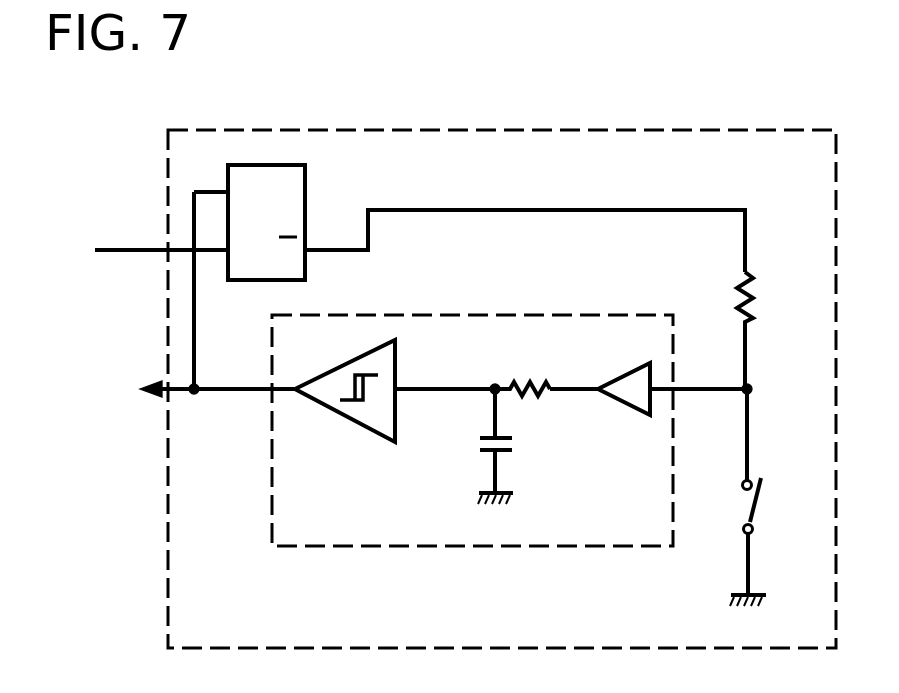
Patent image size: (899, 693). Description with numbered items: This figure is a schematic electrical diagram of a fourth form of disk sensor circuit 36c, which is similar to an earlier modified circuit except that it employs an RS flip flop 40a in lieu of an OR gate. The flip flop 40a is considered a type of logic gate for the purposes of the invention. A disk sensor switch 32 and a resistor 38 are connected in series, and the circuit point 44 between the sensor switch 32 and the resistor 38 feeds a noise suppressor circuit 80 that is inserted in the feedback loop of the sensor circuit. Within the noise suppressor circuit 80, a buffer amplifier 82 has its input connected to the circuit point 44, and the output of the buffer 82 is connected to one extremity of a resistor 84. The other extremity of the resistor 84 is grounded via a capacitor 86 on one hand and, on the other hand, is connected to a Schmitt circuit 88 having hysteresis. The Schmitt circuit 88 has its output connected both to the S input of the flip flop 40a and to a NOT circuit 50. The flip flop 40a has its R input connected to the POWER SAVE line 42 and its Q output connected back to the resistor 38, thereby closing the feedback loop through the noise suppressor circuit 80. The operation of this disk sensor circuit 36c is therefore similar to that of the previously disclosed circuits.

The disk sensor circuit 36c is at (493, 130).
The noise suppressor circuit 80 is at (513, 313).
The RS flip flop 40a is at (305, 193).
The POWER SAVE line 42 is at (115, 246).
The resistor 38 is at (752, 296).
The circuit point 44 is at (752, 389).
The disk sensor switch 32 is at (755, 506).
The buffer amplifier 82 is at (619, 379).
The resistor 84 is at (539, 383).
The capacitor 86 is at (485, 447).
The Schmitt circuit 88 is at (350, 421).
The NOT circuit 50 is at (155, 398).